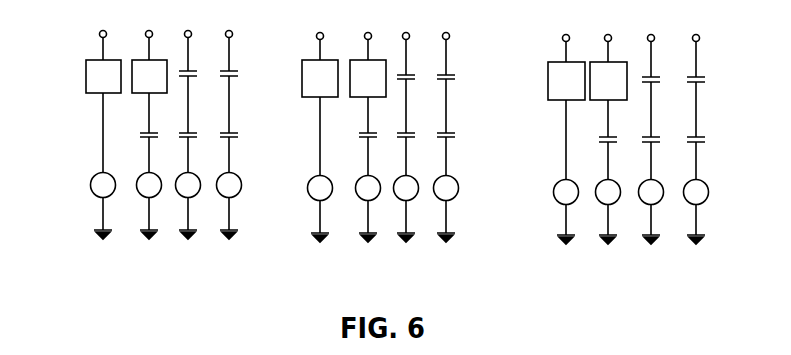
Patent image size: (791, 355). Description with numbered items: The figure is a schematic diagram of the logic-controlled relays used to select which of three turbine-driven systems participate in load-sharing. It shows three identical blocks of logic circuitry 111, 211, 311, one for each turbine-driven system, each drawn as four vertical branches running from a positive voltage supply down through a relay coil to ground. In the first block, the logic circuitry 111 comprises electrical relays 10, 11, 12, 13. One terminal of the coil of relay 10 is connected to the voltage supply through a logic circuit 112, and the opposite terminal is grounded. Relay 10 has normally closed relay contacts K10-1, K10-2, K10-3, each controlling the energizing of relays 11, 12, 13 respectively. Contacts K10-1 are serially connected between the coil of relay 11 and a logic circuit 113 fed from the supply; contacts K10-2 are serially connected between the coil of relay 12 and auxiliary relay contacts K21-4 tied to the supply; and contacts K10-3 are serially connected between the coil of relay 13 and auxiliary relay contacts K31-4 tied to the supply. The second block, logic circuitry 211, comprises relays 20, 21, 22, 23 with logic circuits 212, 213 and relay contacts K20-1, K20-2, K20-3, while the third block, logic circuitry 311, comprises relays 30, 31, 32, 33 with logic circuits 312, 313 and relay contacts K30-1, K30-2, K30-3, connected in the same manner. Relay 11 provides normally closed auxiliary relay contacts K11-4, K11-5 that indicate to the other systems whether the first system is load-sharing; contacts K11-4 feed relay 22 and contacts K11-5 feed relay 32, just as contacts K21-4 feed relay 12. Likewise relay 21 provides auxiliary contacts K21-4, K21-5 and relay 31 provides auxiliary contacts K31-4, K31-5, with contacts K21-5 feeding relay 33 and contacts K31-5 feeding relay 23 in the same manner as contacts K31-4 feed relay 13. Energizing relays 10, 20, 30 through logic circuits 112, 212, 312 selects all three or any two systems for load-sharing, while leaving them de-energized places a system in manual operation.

The logic circuitry 111 is at (165, 142).
The logic circuitry 211 is at (387, 146).
The logic circuitry 311 is at (635, 149).
The logic circuit 112 is at (92, 94).
The logic circuit 113 is at (142, 94).
The logic circuit 212 is at (312, 98).
The logic circuit 213 is at (362, 98).
The logic circuit 312 is at (558, 101).
The logic circuit 313 is at (605, 101).
The relay 10 is at (93, 192).
The relay 11 is at (139, 193).
The relay 12 is at (178, 193).
The relay 13 is at (219, 193).
The relay 20 is at (310, 195).
The relay 21 is at (358, 196).
The relay 22 is at (397, 197).
The relay 23 is at (437, 197).
The relay 30 is at (556, 199).
The relay 31 is at (598, 200).
The relay 32 is at (641, 201).
The relay 33 is at (686, 202).
The auxiliary relay contacts K21-4 is at (197, 76).
The auxiliary relay contacts K31-4 is at (238, 76).
The relay contacts K10-1 is at (140, 137).
The relay contacts K10-2 is at (179, 137).
The relay contacts K10-3 is at (220, 137).
The auxiliary relay contacts K11-4 is at (397, 75).
The auxiliary relay contacts K31-5 is at (455, 75).
The relay contacts K20-1 is at (359, 137).
The relay contacts K20-2 is at (397, 137).
The relay contacts K20-3 is at (437, 137).
The auxiliary relay contacts K11-5 is at (645, 78).
The auxiliary relay contacts K21-5 is at (705, 78).
The relay contacts K30-1 is at (599, 140).
The relay contacts K30-2 is at (645, 139).
The relay contacts K30-3 is at (705, 142).